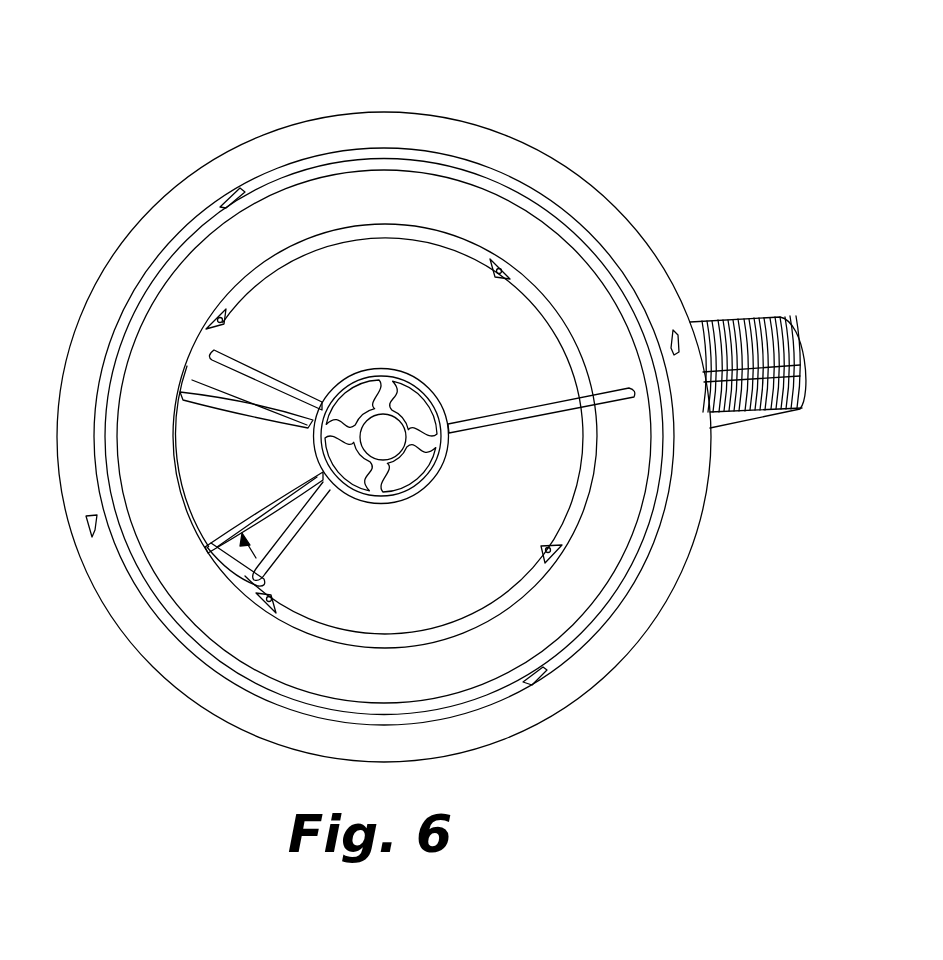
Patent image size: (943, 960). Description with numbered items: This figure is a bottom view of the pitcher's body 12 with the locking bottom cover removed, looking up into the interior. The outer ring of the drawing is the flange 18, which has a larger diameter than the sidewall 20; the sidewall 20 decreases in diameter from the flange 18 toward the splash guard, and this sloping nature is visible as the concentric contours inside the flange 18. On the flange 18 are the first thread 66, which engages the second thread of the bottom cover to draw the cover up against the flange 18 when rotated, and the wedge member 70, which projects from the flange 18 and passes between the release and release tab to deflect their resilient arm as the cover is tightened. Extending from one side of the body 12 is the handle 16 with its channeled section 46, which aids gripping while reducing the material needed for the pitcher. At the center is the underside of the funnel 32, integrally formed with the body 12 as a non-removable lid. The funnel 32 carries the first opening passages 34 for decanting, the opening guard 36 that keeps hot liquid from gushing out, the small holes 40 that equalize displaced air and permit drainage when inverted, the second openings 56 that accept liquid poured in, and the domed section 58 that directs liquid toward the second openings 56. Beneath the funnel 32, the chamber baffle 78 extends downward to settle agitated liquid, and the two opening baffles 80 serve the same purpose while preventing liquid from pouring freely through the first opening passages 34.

The body 12 is at (158, 68).
The handle 16 is at (733, 318).
The flange 18 is at (594, 664).
The sidewall 20 is at (293, 660).
The funnel 32 is at (377, 571).
The first opening passages 34 is at (262, 578).
The opening guard 36 is at (210, 450).
The small holes 40 is at (555, 554).
The channeled section 46 is at (816, 325).
The second openings 56 is at (358, 395).
The domed section 58 is at (390, 432).
The first thread 66 is at (386, 147).
The wedge member 70 is at (674, 334).
The chamber baffle 78 is at (548, 415).
The opening baffles 80 is at (258, 392).